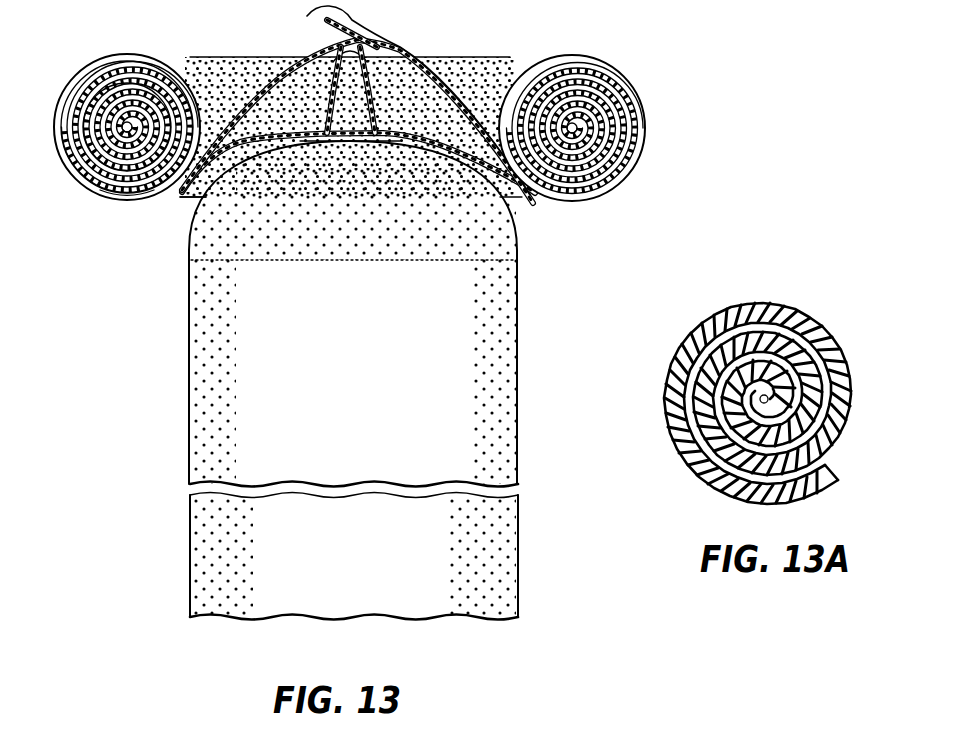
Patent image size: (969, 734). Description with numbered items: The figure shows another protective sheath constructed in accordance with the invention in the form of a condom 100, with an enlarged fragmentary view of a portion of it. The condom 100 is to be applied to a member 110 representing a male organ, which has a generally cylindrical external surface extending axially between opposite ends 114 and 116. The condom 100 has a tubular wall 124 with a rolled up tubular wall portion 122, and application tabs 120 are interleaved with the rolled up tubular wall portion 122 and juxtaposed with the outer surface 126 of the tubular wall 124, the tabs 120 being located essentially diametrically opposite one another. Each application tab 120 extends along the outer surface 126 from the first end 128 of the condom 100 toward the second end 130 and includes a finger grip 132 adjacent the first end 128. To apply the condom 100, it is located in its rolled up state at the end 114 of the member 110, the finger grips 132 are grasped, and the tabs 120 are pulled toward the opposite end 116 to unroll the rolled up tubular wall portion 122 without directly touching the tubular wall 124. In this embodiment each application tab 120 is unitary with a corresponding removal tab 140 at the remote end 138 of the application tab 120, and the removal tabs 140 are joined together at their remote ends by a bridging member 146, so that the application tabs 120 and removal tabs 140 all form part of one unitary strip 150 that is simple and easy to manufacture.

In FIG. 13, the condom 100 is at (68, 78).
In FIG. 13A, the condom 100 is at (834, 309).
In FIG. 13, the member 110 is at (186, 354).
In FIG. 13, the end 114 is at (373, 112).
In FIG. 13, the end 116 is at (192, 618).
In FIG. 13, the application tab 120 is at (224, 104).
In FIG. 13A, the application tab 120 is at (818, 395).
In FIG. 13, the rolled up tubular wall portion 122 is at (165, 75).
In FIG. 13, the tubular wall 124 is at (117, 198).
In FIG. 13, the outer surface 126 is at (259, 132).
In FIG. 13, the first end 128 is at (468, 102).
In FIG. 13, the second end 130 is at (143, 124).
In FIG. 13A, the second end 130 is at (767, 398).
In FIG. 13, the finger grip 132 is at (315, 51).
In FIG. 13, the remote end 138 is at (153, 88).
In FIG. 13A, the remote end 138 is at (771, 382).
In FIG. 13A, the removal tab 140 is at (838, 429).
In FIG. 13, the bridging member 146 is at (343, 137).
In FIG. 13, the unitary strip 150 is at (187, 199).